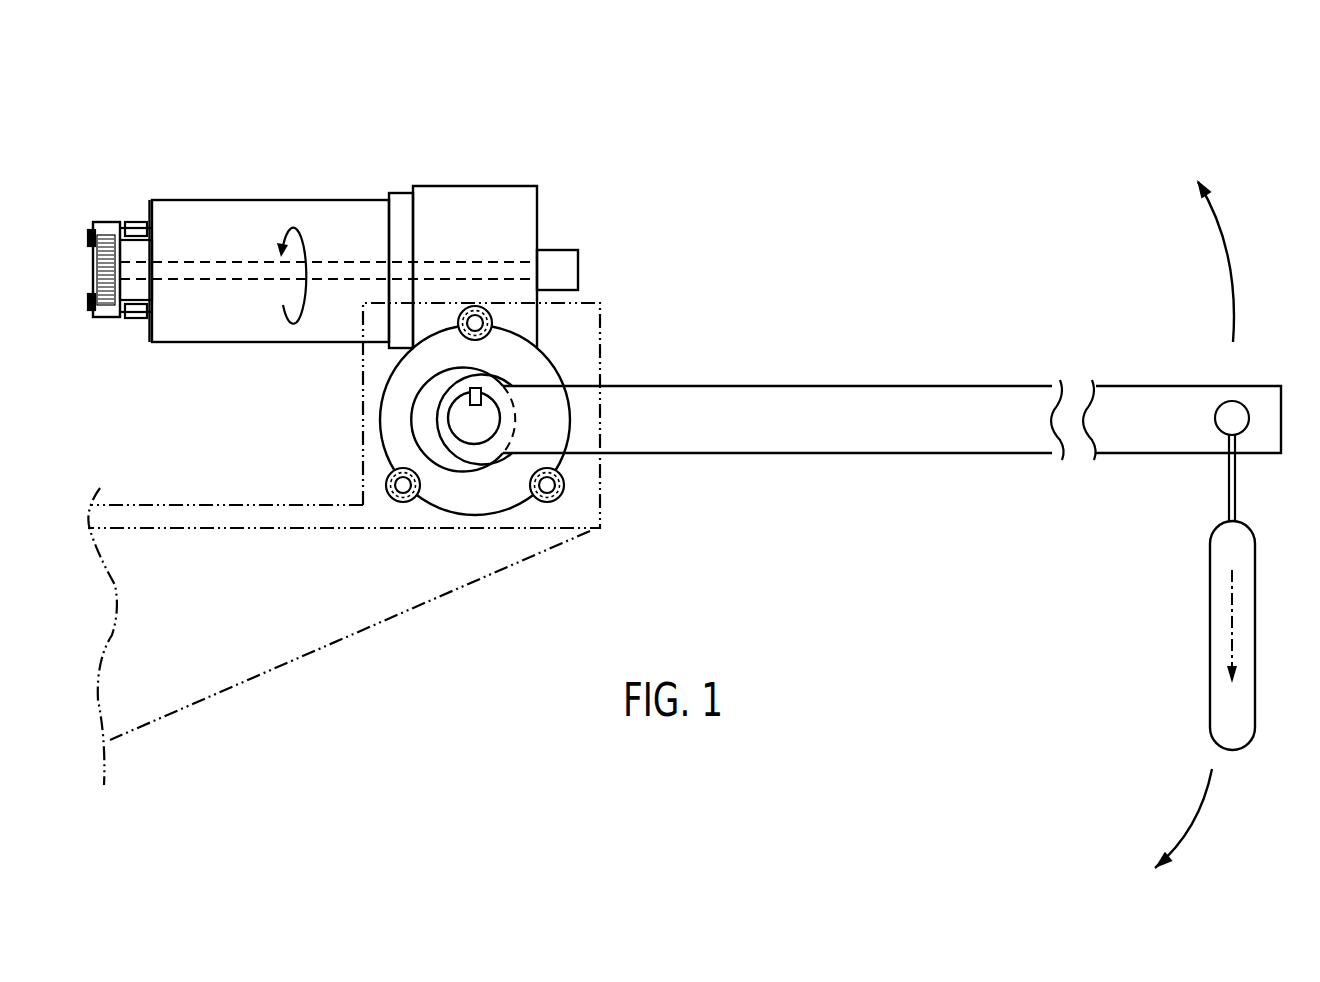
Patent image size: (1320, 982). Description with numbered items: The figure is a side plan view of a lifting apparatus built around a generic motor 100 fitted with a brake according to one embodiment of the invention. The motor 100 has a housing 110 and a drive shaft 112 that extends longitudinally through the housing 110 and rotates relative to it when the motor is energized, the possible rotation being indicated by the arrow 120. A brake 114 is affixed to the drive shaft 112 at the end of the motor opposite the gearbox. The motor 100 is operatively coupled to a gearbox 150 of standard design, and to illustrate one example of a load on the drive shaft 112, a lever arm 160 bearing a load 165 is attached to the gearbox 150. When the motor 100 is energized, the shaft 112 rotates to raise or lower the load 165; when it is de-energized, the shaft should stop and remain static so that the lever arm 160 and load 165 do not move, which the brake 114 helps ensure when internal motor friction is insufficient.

The motor 100 is at (454, 146).
The housing 110 is at (338, 200).
The drive shaft 112 is at (185, 263).
The brake 114 is at (119, 180).
The arrow 120 is at (300, 234).
The gearbox 150 is at (516, 186).
The lever arm 160 is at (829, 386).
The load 165 is at (1256, 606).